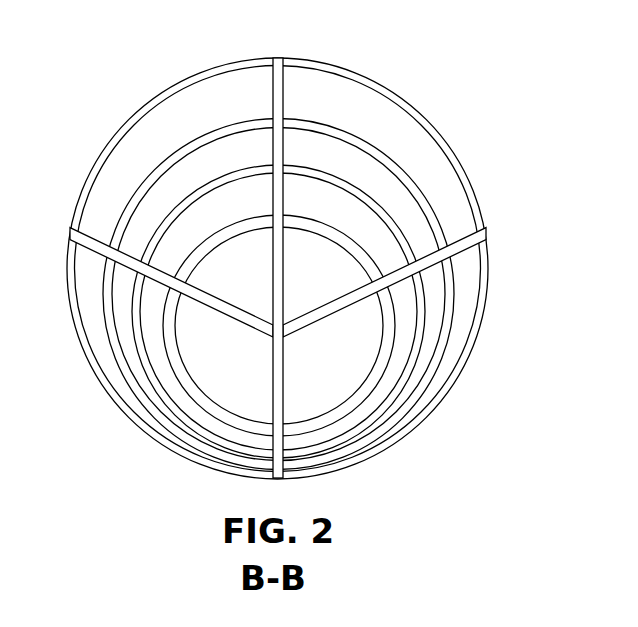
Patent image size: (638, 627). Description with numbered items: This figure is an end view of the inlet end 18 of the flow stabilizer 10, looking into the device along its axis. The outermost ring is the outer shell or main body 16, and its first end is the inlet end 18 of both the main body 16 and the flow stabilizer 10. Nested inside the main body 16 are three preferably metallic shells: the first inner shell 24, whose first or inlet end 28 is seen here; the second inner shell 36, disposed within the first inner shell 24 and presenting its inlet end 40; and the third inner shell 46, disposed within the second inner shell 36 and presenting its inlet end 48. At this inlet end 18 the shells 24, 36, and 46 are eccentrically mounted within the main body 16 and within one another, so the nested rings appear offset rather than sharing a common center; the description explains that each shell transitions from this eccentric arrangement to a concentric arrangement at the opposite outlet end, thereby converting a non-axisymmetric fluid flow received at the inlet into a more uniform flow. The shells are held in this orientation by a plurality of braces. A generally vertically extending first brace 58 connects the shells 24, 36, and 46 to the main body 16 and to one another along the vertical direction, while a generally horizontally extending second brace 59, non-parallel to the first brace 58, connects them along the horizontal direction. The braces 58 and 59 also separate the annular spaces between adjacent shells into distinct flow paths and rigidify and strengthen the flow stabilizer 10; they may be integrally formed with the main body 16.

The flow stabilizer 10 is at (478, 130).
The outer shell 16 is at (365, 85).
The inlet end 18 is at (338, 66).
The first inner shell 24 is at (385, 154).
The inlet end of first inner shell 28 is at (362, 136).
The second inner shell 36 is at (422, 337).
The inlet end of second inner shell 40 is at (418, 305).
The third inner shell 46 is at (387, 345).
The inlet end of third inner shell 48 is at (375, 390).
The first brace 58 is at (284, 90).
The second brace 59 is at (455, 243).